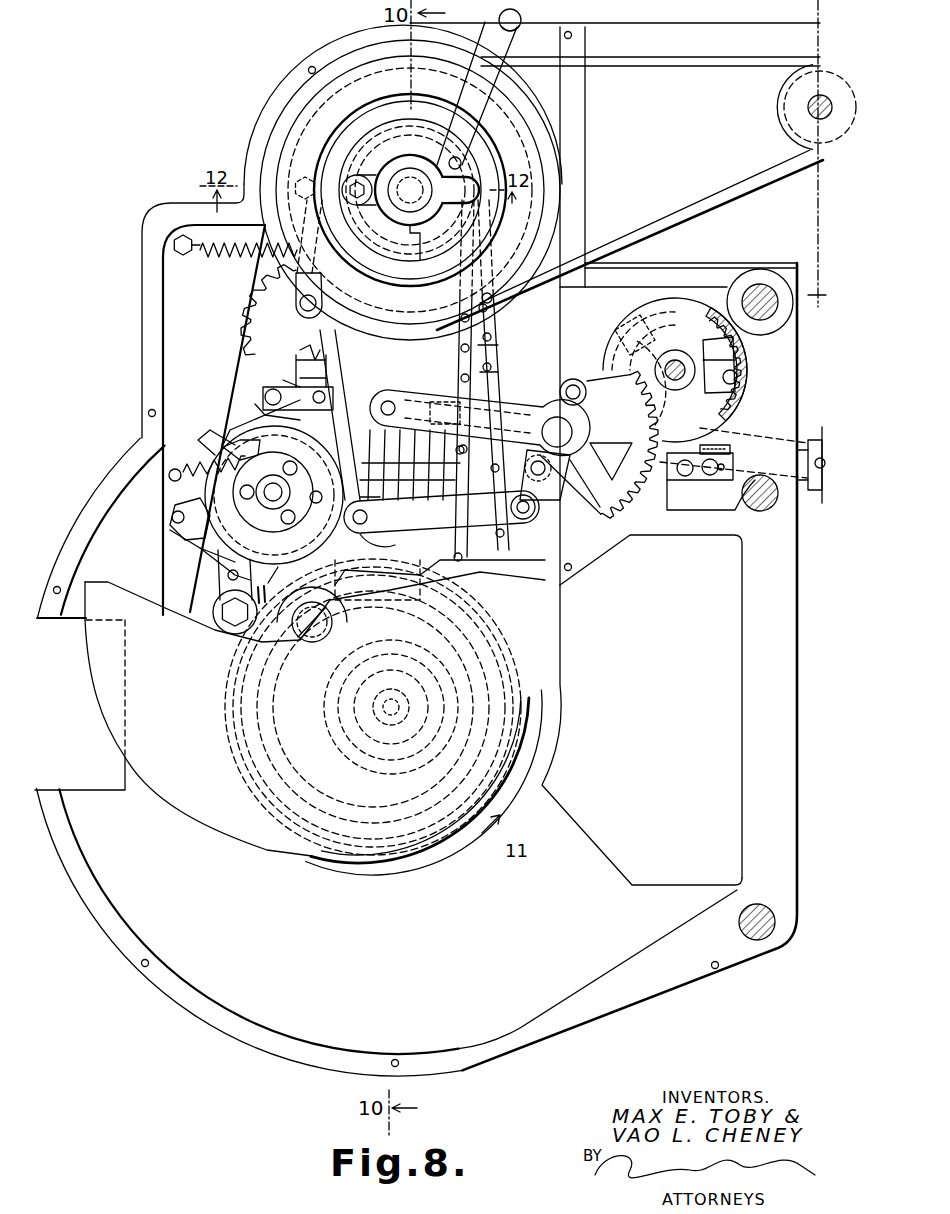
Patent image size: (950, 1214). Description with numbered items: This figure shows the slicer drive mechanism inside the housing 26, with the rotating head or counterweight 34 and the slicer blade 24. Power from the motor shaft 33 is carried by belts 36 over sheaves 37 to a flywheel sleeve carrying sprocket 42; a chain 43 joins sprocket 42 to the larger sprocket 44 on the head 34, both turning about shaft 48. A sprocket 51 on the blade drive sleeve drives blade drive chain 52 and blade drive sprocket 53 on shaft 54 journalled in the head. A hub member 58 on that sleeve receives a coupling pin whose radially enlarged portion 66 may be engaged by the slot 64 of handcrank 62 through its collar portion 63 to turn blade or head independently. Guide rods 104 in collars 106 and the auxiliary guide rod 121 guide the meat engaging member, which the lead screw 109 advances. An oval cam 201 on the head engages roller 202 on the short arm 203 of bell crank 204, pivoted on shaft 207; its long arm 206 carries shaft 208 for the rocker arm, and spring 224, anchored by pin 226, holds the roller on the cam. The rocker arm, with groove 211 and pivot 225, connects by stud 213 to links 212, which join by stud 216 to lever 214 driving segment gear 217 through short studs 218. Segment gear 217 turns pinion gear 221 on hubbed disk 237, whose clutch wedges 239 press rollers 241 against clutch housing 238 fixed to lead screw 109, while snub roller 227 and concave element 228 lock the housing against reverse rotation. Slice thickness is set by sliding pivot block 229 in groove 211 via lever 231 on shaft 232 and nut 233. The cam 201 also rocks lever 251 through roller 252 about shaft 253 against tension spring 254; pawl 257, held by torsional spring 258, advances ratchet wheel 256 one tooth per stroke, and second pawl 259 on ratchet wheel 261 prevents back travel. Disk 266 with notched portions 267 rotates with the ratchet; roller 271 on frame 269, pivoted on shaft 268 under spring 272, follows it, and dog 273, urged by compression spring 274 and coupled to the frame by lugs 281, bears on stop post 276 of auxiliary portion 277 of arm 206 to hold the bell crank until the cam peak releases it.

The slicer blade 24 is at (210, 822).
The housing 26 is at (668, 1009).
The drive shaft 33 is at (815, 105).
The rotating head 34 is at (453, 835).
The belts 36 is at (690, 208).
The sheaves 37 is at (802, 137).
The sprocket 42 is at (523, 103).
The chain 43 is at (497, 298).
The sprocket 44 is at (505, 766).
The shaft 48 is at (290, 106).
The sprocket 51 is at (393, 113).
The blade drive chain 52 is at (447, 672).
The blade drive sprocket 53 is at (440, 745).
The shaft 54 is at (405, 710).
The hub member 58 is at (350, 178).
The handcrank 62 is at (501, 53).
The collar portion 63 is at (427, 207).
The slot 64 is at (455, 157).
The radially enlarged portion 66 is at (377, 172).
The guide rods 104 is at (762, 290).
The collars 106 is at (773, 278).
The lead screw 109 is at (677, 365).
The auxiliary guide rod 121 is at (773, 507).
The cam 201 is at (393, 870).
The roller 202 is at (270, 495).
The short arm 203 is at (380, 565).
The bell crank 204 is at (391, 503).
The long arm 206 is at (403, 481).
The shaft 207 is at (400, 537).
The shaft 208 is at (490, 322).
The groove 211 is at (395, 465).
The links 212 is at (505, 527).
The stud 213 is at (358, 533).
The lever 214 is at (600, 508).
The stud 216 is at (530, 507).
The segment gear 217 is at (646, 417).
The short studs 218 is at (573, 385).
The pinion gear 221 is at (650, 366).
The spring 224 is at (218, 258).
The pivot shaft 225 is at (460, 449).
The pin 226 is at (173, 246).
The snub roller 227 is at (700, 456).
The concave element 228 is at (674, 482).
The pivot block 229 is at (494, 339).
The lever 231 is at (733, 445).
The shaft 232 is at (553, 420).
The nut 233 is at (810, 445).
The hubbed disk 237 is at (738, 378).
The clutch housing 238 is at (632, 318).
The clutch wedges 239 is at (735, 392).
The rollers 241 is at (738, 362).
The lever 251 is at (220, 620).
The roller 252 is at (292, 630).
The shaft 253 is at (270, 491).
The tension spring 254 is at (183, 470).
The ratchet wheel 256 is at (215, 455).
The pawl 257 is at (230, 563).
The torsional spring 258 is at (228, 574).
The second pawl 259 is at (187, 533).
The ratchet wheel 261 is at (235, 440).
The disk-like member 266 is at (193, 490).
The notched portions 267 is at (272, 408).
The shaft 268 is at (318, 380).
The frame 269 is at (300, 362).
The roller 271 is at (292, 390).
The spring 272 is at (298, 398).
The dog 273 is at (328, 350).
The compression spring 274 is at (303, 352).
The stop post 276 is at (494, 354).
The auxiliary portion 277 is at (497, 372).
The lugs 281 is at (314, 490).